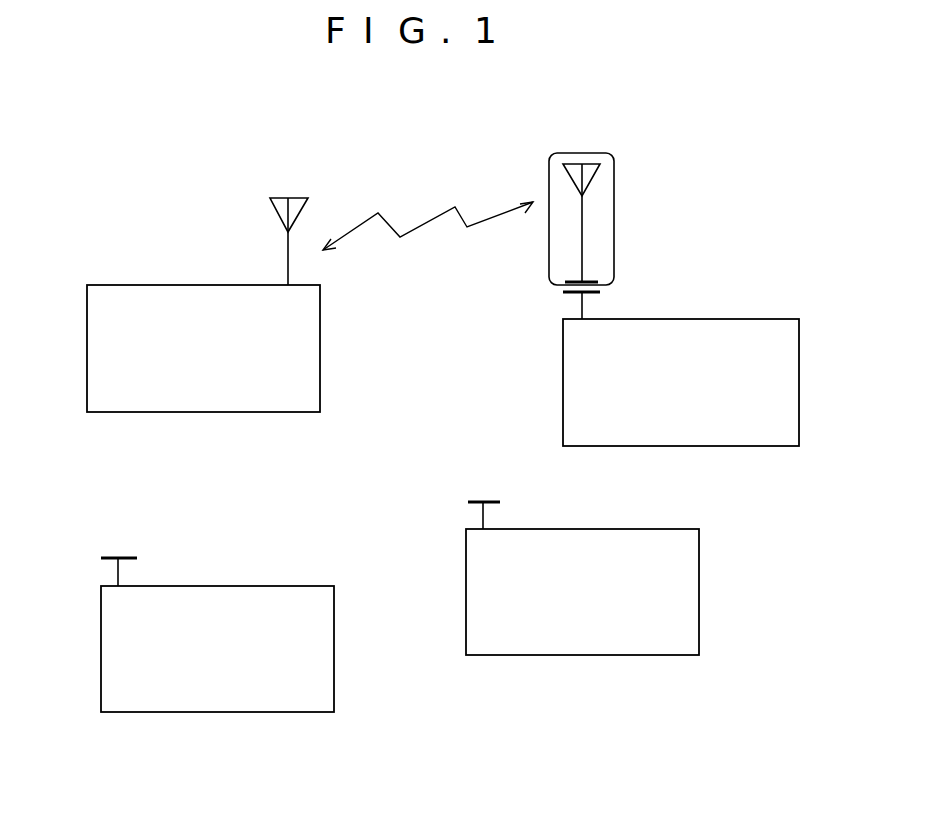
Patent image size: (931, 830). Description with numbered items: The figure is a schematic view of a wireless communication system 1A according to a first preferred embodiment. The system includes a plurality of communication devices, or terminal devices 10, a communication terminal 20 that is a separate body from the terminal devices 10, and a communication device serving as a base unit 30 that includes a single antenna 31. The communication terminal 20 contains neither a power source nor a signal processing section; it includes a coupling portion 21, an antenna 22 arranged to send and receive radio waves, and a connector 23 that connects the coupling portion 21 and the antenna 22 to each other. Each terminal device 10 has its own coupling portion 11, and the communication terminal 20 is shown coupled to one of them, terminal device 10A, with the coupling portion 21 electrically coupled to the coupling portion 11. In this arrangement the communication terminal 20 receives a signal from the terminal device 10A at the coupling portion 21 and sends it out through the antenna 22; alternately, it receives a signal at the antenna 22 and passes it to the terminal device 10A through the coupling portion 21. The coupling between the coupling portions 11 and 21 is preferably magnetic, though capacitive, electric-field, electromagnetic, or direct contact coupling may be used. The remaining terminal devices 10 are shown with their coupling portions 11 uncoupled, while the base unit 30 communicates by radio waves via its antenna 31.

The wireless communication system 1A is at (272, 138).
The communication device (terminal device) 10 is at (450, 515).
The terminal device 10A is at (563, 406).
The coupling portion 11 is at (598, 297).
The communication terminal 20 is at (614, 197).
The coupling portion 21 is at (595, 282).
The antenna 22 is at (588, 162).
The connector 23 is at (580, 255).
The communication device (base unit) 30 is at (123, 283).
The antenna 31 is at (279, 216).